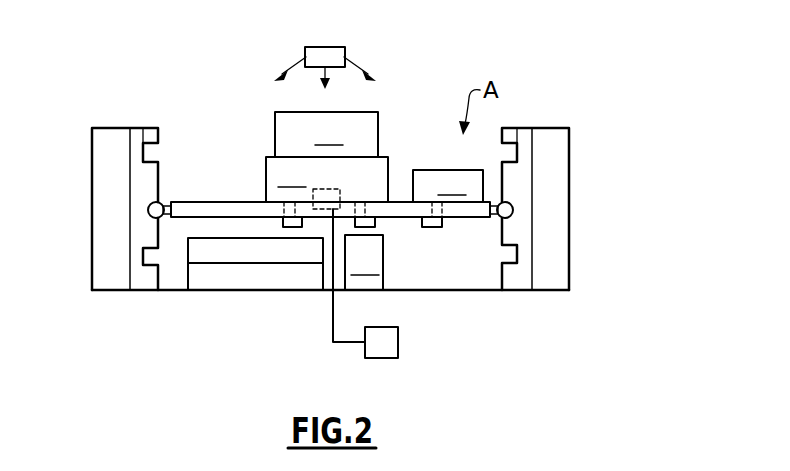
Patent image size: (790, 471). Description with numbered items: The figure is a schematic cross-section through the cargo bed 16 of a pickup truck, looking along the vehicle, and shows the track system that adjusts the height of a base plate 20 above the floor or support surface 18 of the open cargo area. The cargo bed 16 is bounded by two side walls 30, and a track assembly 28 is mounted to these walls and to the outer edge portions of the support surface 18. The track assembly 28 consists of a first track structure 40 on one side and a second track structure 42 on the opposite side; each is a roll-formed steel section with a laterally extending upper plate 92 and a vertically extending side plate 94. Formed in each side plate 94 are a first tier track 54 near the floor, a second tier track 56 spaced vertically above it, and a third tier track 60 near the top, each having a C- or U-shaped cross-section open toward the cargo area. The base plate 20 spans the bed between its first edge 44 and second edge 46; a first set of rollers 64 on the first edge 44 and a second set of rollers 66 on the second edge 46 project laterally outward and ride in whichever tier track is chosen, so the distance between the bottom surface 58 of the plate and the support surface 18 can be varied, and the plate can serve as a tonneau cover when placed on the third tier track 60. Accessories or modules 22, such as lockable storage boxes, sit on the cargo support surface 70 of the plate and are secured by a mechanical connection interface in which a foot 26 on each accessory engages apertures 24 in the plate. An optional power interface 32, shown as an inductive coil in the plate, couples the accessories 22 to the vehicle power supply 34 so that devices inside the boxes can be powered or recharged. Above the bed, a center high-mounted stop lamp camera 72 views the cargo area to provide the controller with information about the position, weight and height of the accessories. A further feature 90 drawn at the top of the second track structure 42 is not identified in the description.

The cargo bed 16 is at (115, 118).
The support surface 18 is at (424, 291).
The base plate 20 is at (197, 203).
The accessories/modules 22 is at (278, 248).
The apertures 24 is at (278, 205).
The foot 26 is at (265, 238).
The track assembly 28 is at (530, 116).
The side walls 30 is at (100, 210).
The power interface 32 is at (342, 197).
The vehicle power supply 34 is at (366, 283).
The first track structure 40 is at (138, 173).
The second track structure 42 is at (523, 173).
The first edge 44 is at (182, 202).
The second edge 46 is at (482, 218).
The first tier track 54 is at (137, 291).
The second tier track 56 is at (143, 263).
The bottom surface 58 is at (180, 218).
The third tier track 60 is at (143, 150).
The first set of sliders or rollers 64 is at (148, 208).
The second set of sliders or rollers 66 is at (510, 215).
The cargo support surface 70 is at (258, 200).
The center high-mounted stop lamp camera 72 is at (315, 47).
The cover 90 is at (555, 127).
The upper plate 92 is at (145, 127).
The side plate 94 is at (157, 178).